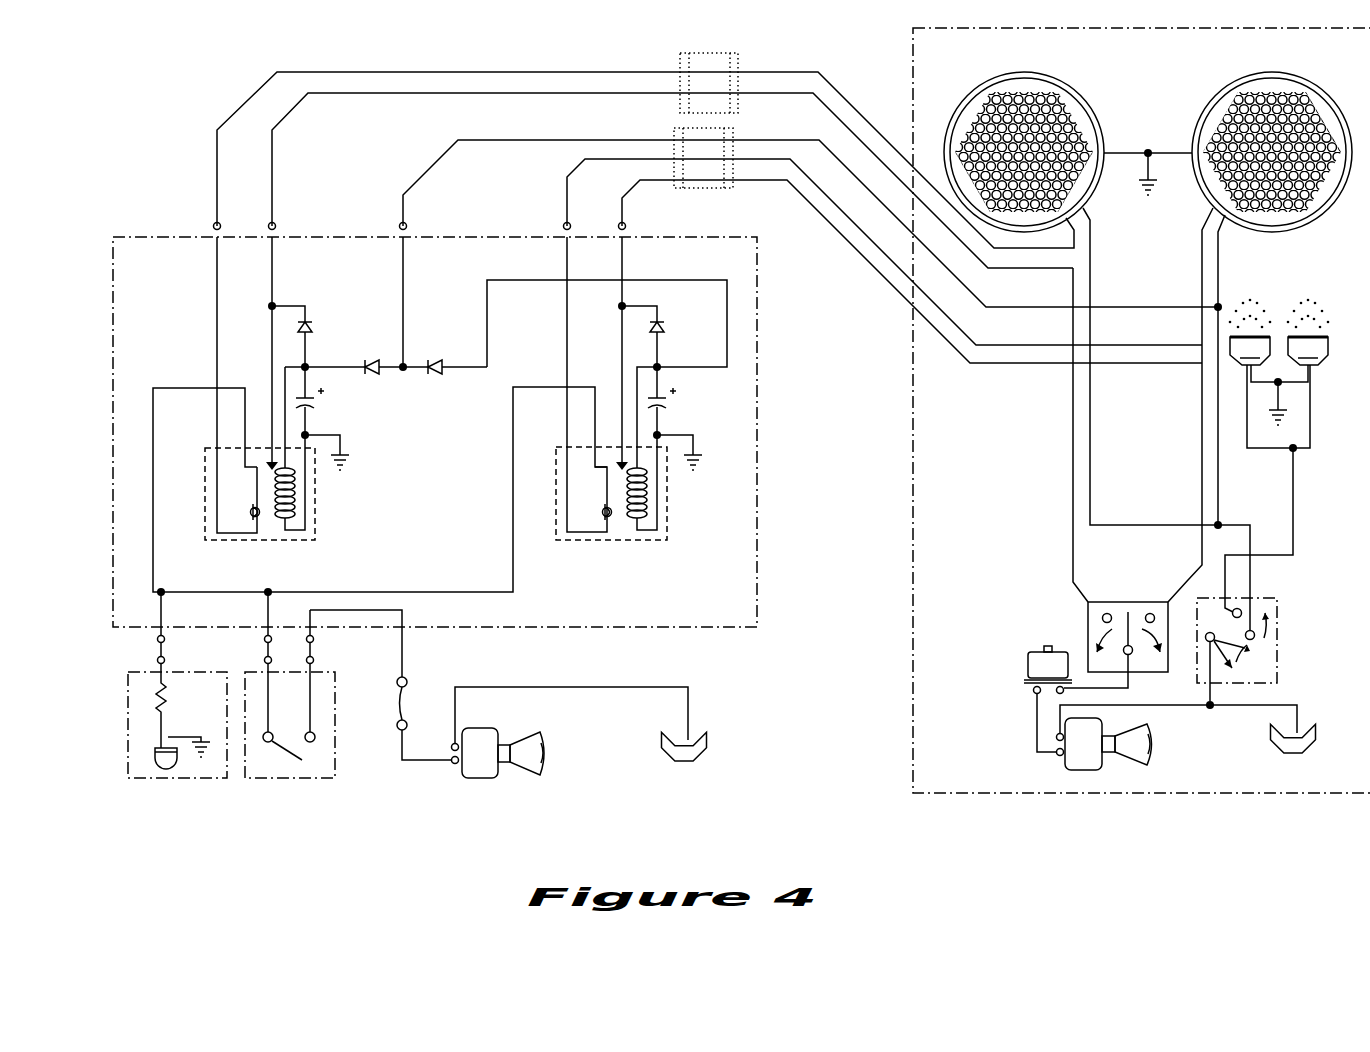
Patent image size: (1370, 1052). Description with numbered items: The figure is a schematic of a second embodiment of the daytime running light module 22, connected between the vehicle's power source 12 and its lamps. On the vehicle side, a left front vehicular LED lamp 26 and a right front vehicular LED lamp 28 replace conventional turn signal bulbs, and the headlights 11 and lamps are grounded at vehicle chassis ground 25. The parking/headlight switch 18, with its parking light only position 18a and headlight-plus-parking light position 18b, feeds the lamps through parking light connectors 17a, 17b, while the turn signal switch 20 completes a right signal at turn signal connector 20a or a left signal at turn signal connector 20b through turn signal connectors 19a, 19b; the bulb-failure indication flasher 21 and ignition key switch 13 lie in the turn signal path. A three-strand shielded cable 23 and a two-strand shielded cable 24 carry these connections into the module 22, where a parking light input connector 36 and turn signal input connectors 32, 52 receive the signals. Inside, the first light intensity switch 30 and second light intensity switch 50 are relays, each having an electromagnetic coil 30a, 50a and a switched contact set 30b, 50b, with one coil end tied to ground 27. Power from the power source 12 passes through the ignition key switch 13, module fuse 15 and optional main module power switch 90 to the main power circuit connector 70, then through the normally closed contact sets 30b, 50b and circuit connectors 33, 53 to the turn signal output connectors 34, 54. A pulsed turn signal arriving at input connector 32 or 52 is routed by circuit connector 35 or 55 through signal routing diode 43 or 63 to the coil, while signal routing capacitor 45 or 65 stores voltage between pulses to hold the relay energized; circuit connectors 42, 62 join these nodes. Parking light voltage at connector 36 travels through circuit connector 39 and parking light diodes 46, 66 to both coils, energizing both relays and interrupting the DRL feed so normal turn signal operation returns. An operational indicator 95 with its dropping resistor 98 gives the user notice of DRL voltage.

The daytime running light module 22 is at (110, 235).
The turn signal output connector 54 is at (212, 222).
The circuit connector 53 is at (213, 284).
The turn signal input connector 52 is at (267, 222).
The circuit connector 55 is at (267, 335).
The parking light input connector 36 is at (397, 222).
The circuit connector 39 is at (407, 288).
The turn signal output connector 34 is at (562, 222).
The circuit connector 33 is at (565, 434).
The turn signal input connector 32 is at (618, 222).
The circuit connector 35 is at (617, 333).
The signal routing diode 63 is at (313, 324).
The circuit connector 62 is at (337, 355).
The parking light diode 66 is at (377, 382).
The parking light diode 46 is at (433, 348).
The signal routing capacitor 65 is at (318, 403).
The main power circuit connector 70 is at (192, 383).
The second light intensity switch 50 is at (293, 542).
The electromagnetic coil 50a is at (300, 512).
The switched contact set 50b is at (248, 498).
The circuit connector 42 is at (488, 318).
The signal routing diode 43 is at (667, 318).
The signal routing capacitor 45 is at (667, 398).
The first light intensity switch 30 is at (647, 543).
The electromagnetic coil 30a is at (650, 513).
The switched contact set 30b is at (598, 500).
The ground 27 is at (345, 473).
The dropping resistor 98 is at (153, 697).
The operational indicator 95 is at (160, 780).
The main module power switch 90 is at (300, 780).
The module fuse 15 is at (412, 700).
The ignition key switch 13 is at (552, 740).
The power source 12 is at (670, 773).
The three-strand shielded cable 23 is at (680, 98).
The two-strand shielded cable 24 is at (728, 130).
The right front vehicular LED lamp 28 is at (1082, 93).
The left front vehicular LED lamp 26 is at (1215, 92).
The vehicle chassis ground 25 is at (1131, 197).
The parking light connector 17b is at (1095, 418).
The turn signal connector 19b is at (1063, 498).
The turn signal connector 19a is at (1197, 472).
The parking light connector 17a is at (1213, 517).
The headlights 11 is at (1307, 305).
The turn signal switch 20 is at (1090, 630).
The turn signal connector 20b is at (1107, 608).
The turn signal connector 20a is at (1150, 610).
The bulb-failure indication flasher 21 is at (1025, 655).
The parking/headlight switch 18 is at (1282, 672).
The parking light only position 18a is at (1268, 650).
The headlight-plus-parking light position 18b is at (1242, 612).